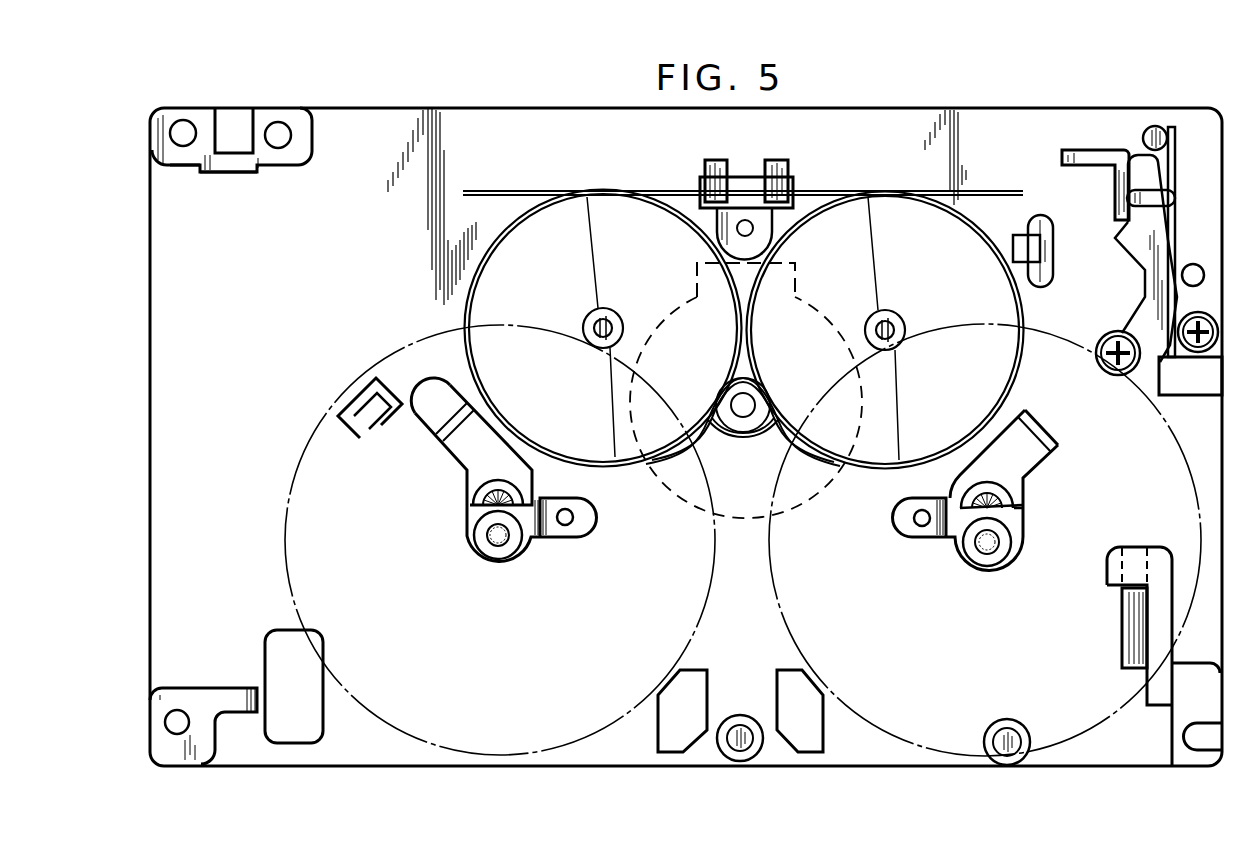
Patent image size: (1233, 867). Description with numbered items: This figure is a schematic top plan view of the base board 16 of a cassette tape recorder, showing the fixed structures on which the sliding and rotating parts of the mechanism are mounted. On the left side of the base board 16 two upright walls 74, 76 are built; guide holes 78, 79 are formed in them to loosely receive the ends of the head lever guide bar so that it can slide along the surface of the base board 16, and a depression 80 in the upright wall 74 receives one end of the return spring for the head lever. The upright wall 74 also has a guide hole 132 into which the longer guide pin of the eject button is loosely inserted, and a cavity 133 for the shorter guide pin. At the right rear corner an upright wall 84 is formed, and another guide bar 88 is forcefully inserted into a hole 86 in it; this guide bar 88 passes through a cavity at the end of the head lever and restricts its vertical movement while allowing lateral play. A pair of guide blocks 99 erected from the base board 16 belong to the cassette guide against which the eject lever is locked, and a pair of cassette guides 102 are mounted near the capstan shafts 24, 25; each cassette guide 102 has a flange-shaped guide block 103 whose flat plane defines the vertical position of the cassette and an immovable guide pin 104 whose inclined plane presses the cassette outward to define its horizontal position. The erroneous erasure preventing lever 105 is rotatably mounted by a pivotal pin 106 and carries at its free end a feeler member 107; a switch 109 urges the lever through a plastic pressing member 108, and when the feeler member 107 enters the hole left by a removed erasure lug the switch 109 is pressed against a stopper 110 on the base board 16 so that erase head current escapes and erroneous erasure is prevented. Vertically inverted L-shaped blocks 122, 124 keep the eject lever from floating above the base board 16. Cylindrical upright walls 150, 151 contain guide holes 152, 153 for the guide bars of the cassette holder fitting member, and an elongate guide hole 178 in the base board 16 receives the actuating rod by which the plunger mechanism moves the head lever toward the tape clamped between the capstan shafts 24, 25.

The base board 16 is at (399, 774).
The capstan shaft 24 is at (990, 554).
The capstan shaft 25 is at (500, 548).
The upright wall 74 is at (312, 150).
The upright wall 76 is at (176, 764).
The guide hole 78 is at (240, 174).
The guide hole 79 is at (241, 712).
The depression 80 is at (185, 167).
The upright wall 84 is at (1160, 600).
The hole 86 is at (1148, 548).
The guide bar 88 is at (1122, 640).
The guide block 99 is at (776, 160).
The cassette guide 102 is at (521, 463).
The guide block 103 is at (518, 489).
The guide pin 104 is at (490, 497).
The erroneous erasure preventing lever 105 is at (1133, 322).
The pivotal pin 106 is at (1114, 375).
The feeler member 107 is at (1083, 166).
The plastic pressing member 108 is at (1160, 193).
The switch 109 is at (1176, 226).
The stopper 110 is at (1156, 126).
The inverted L-shaped block 122 is at (1018, 237).
The inverted L-shaped block 124 is at (368, 418).
The guide hole 132 is at (279, 124).
The cavity 133 is at (233, 108).
The cylindrical upright wall 150 is at (740, 762).
The cylindrical upright wall 151 is at (1008, 765).
The guide hole 152 is at (752, 746).
The guide hole 153 is at (1023, 748).
The elongate guide hole 178 is at (323, 738).